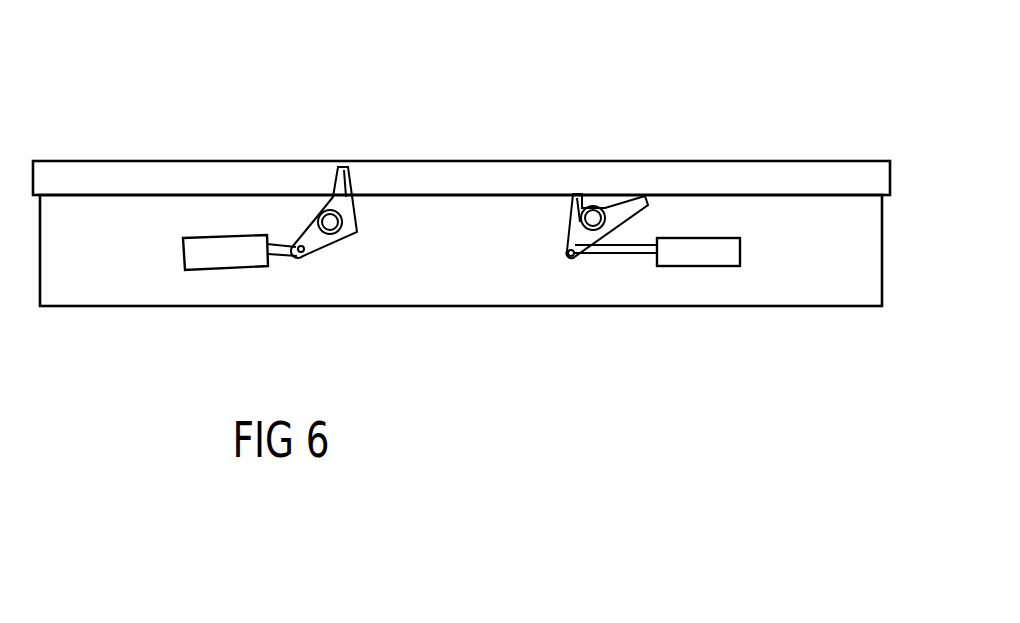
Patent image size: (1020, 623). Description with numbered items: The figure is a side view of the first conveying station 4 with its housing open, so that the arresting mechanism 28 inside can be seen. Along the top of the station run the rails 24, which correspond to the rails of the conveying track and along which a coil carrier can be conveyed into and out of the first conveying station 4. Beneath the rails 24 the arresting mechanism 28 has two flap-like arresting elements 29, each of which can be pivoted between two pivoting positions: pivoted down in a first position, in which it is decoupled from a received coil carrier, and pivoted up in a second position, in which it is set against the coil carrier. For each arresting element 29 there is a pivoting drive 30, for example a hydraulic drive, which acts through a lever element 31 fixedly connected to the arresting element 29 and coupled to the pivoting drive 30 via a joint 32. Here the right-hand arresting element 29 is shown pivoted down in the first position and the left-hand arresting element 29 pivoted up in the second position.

The first conveying station 4 is at (207, 118).
The rails 24 is at (722, 160).
The arresting mechanism 28 is at (469, 228).
The arresting element 29 is at (348, 168).
The pivoting drive 30 is at (223, 260).
The lever element 31 is at (313, 220).
The joint 32 is at (302, 253).